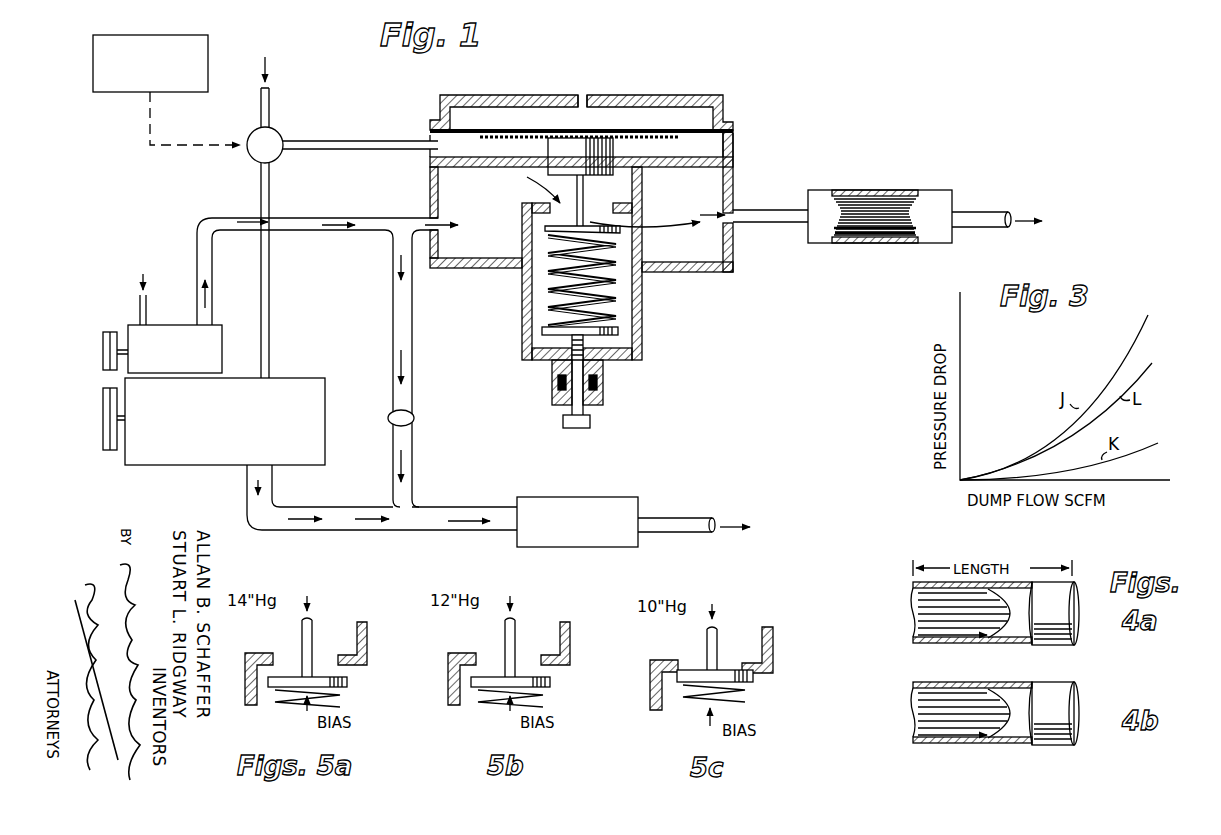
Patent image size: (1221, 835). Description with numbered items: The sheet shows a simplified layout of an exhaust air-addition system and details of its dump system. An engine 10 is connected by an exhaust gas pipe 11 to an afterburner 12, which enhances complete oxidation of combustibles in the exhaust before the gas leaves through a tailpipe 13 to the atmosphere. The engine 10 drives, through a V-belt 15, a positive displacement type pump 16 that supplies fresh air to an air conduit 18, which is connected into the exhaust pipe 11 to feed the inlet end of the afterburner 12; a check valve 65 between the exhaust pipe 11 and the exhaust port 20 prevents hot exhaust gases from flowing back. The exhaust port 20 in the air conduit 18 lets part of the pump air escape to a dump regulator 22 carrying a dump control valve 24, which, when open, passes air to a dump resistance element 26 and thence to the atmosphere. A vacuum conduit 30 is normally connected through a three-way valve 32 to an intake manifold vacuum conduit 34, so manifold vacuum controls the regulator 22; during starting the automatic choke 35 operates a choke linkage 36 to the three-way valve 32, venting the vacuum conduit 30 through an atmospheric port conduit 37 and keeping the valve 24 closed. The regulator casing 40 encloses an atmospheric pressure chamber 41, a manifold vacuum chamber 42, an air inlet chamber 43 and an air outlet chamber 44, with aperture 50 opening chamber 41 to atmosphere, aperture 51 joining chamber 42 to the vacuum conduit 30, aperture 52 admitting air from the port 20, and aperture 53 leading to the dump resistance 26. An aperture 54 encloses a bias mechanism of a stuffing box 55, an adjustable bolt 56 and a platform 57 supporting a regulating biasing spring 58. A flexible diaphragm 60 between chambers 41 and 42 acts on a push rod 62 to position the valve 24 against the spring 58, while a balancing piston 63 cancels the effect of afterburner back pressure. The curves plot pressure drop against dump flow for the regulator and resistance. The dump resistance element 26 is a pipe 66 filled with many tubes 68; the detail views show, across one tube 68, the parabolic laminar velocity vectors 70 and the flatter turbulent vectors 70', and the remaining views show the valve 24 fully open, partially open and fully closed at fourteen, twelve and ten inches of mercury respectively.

In FIG. 1, the engine 10 is at (296, 380).
In FIG. 1, the exhaust gas pipe 11 is at (330, 507).
In FIG. 1, the afterburner 12 is at (600, 497).
In FIG. 1, the tailpipe 13 is at (656, 534).
In FIG. 1, the V-belt 15 is at (104, 382).
In FIG. 1, the positive displacement type pump 16 is at (212, 328).
In FIG. 1, the air conduit 18 is at (392, 263).
In FIG. 1, the exhaust port 20 is at (394, 219).
In FIG. 1, the dump regulator 22 is at (638, 78).
In FIG. 1, the dump control valve 24 is at (620, 233).
In FIG. 5A, the dump control valve 24 is at (347, 687).
In FIG. 5B, the dump control valve 24 is at (550, 687).
In FIG. 5C, the dump control valve 24 is at (753, 682).
In FIG. 1, the dump resistance element 26 is at (954, 216).
In FIG. 1, the vacuum conduit 30 is at (325, 144).
In FIG. 1, the three-way valve 32 is at (278, 136).
In FIG. 1, the intake manifold vacuum conduit 34 is at (270, 198).
In FIG. 1, the automatic choke 35 is at (156, 40).
In FIG. 1, the choke linkage 36 is at (178, 146).
In FIG. 1, the atmospheric port conduit 37 is at (270, 101).
In FIG. 1, the casing 40 is at (735, 177).
In FIG. 1, the atmospheric pressure chamber 41 is at (695, 116).
In FIG. 1, the manifold vacuum chamber 42 is at (733, 150).
In FIG. 1, the air inlet chamber 43 is at (472, 262).
In FIG. 1, the air outlet chamber 44 is at (733, 268).
In FIG. 1, the aperture 50 is at (584, 95).
In FIG. 1, the aperture 51 is at (428, 143).
In FIG. 1, the aperture 52 is at (428, 224).
In FIG. 1, the aperture 53 is at (733, 213).
In FIG. 1, the aperture 54 is at (590, 346).
In FIG. 1, the stuffing box 55 is at (604, 397).
In FIG. 1, the adjustable bolt 56 is at (591, 426).
In FIG. 1, the platform 57 is at (620, 332).
In FIG. 1, the regulating biasing spring 58 is at (632, 281).
In FIG. 1, the flexible diaphragm 60 is at (501, 130).
In FIG. 1, the push rod 62 is at (585, 203).
In FIG. 5A, the push rod 62 is at (313, 652).
In FIG. 5B, the push rod 62 is at (516, 652).
In FIG. 5C, the push rod 62 is at (718, 660).
In FIG. 1, the balancing piston 63 is at (556, 150).
In FIG. 1, the check valve 65 is at (414, 417).
In FIG. 1, the pipe 66 is at (927, 190).
In FIG. 1, the tubes 68 is at (890, 245).
In FIG. 4A, the tubes 68 is at (1058, 682).
In FIG. 4A, the vectors 70 is at (953, 612).
In FIG. 4B, the vectors 70' is at (975, 713).